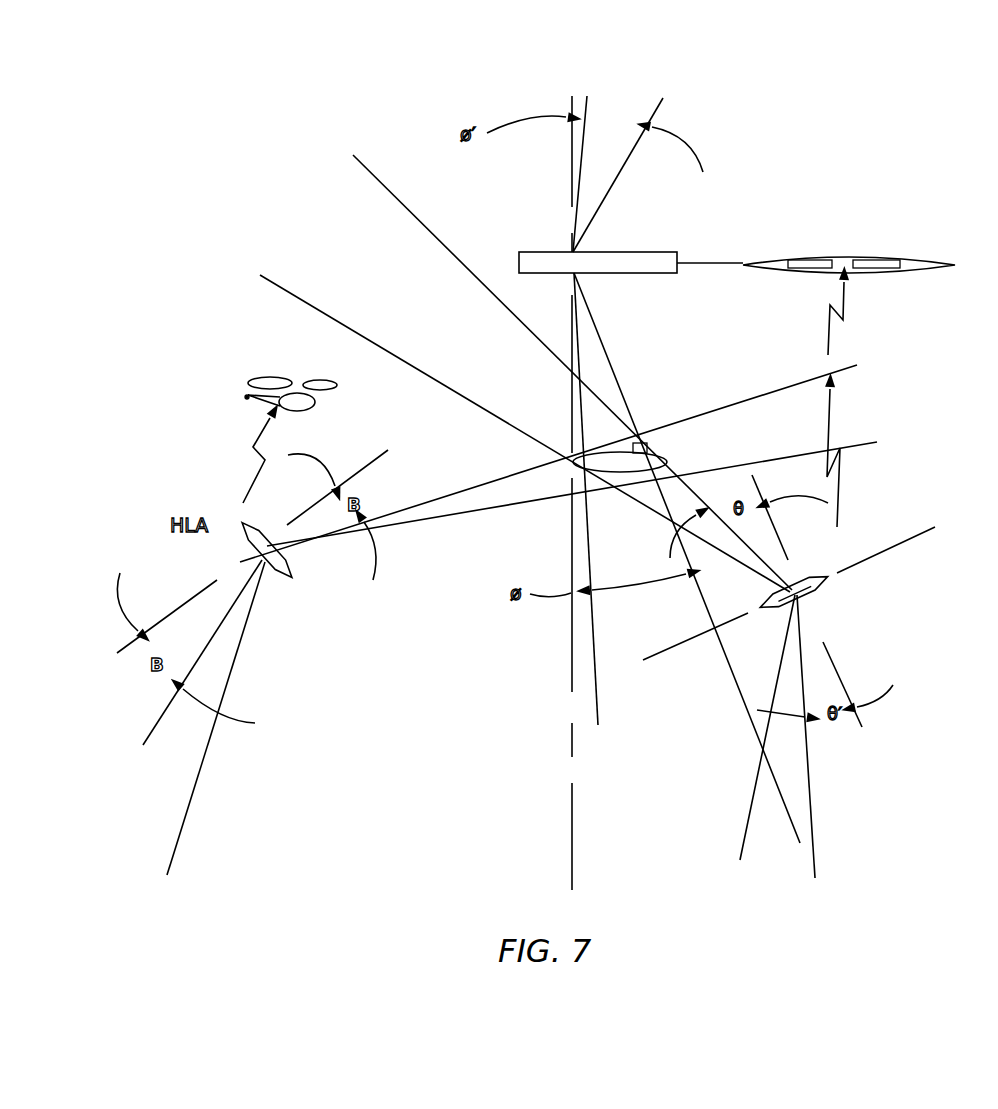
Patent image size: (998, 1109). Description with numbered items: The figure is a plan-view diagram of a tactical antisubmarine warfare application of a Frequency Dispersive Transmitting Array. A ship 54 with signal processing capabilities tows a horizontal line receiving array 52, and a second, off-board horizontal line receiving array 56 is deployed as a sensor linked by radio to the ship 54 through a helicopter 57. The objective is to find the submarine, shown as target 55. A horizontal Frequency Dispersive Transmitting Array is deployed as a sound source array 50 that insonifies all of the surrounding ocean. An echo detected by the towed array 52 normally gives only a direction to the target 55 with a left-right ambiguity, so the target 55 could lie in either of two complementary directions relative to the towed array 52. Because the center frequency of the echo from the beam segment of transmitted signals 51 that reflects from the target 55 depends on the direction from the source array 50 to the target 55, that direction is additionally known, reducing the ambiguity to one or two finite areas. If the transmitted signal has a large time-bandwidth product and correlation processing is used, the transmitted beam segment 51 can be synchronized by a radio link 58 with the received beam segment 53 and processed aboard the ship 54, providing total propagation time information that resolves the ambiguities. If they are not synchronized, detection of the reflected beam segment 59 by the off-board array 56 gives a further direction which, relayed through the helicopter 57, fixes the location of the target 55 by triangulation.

The sound source array 50 is at (838, 588).
The beam segment of transmitted signals 51 is at (398, 198).
The horizontal line receiving array 52 is at (548, 252).
The received beam segment 53 is at (725, 673).
The ship 54 is at (845, 257).
The target 55 is at (665, 462).
The off-board horizontal line receiving array 56 is at (292, 578).
The helicopter 57 is at (315, 405).
The radio link 58 is at (832, 340).
The reflected beam segment 59 is at (472, 488).